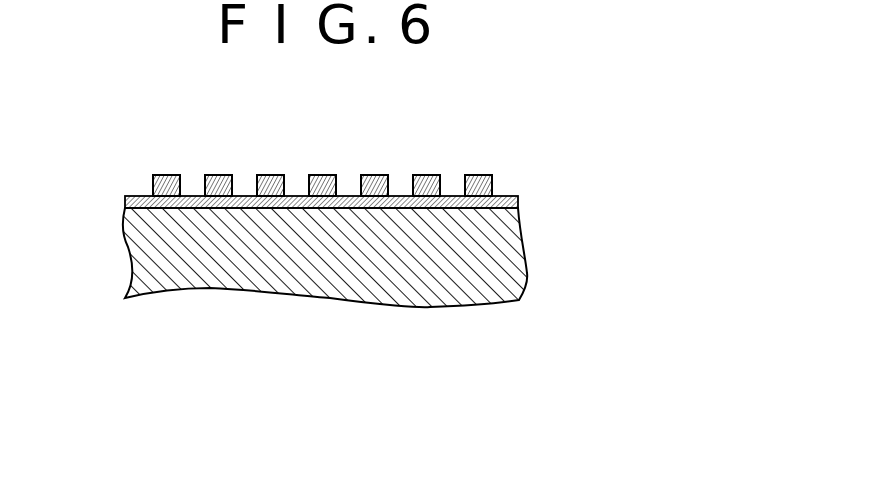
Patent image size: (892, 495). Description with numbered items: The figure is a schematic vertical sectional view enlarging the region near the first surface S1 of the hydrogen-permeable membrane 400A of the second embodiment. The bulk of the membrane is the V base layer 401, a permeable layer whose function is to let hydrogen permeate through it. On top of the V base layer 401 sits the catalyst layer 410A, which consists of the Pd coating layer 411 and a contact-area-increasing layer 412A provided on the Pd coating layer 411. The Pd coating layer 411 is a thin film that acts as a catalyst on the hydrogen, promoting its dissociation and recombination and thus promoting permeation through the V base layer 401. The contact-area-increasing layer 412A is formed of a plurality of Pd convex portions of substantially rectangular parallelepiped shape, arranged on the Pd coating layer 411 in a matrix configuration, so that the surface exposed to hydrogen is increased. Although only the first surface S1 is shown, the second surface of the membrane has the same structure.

The hydrogen-permeable membrane 400A is at (449, 180).
The V base layer 401 is at (518, 245).
The catalyst layer 410A is at (450, 183).
The Pd coating layer 411 is at (518, 199).
The contact-area-increasing layer 412A is at (534, 178).
The first surface S1 is at (147, 143).